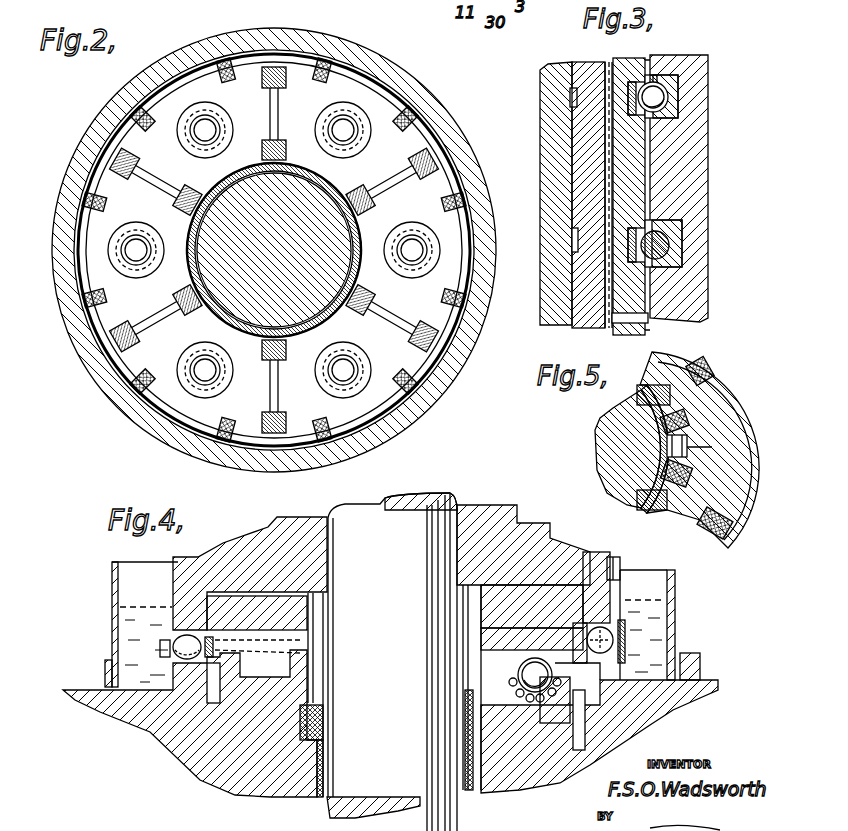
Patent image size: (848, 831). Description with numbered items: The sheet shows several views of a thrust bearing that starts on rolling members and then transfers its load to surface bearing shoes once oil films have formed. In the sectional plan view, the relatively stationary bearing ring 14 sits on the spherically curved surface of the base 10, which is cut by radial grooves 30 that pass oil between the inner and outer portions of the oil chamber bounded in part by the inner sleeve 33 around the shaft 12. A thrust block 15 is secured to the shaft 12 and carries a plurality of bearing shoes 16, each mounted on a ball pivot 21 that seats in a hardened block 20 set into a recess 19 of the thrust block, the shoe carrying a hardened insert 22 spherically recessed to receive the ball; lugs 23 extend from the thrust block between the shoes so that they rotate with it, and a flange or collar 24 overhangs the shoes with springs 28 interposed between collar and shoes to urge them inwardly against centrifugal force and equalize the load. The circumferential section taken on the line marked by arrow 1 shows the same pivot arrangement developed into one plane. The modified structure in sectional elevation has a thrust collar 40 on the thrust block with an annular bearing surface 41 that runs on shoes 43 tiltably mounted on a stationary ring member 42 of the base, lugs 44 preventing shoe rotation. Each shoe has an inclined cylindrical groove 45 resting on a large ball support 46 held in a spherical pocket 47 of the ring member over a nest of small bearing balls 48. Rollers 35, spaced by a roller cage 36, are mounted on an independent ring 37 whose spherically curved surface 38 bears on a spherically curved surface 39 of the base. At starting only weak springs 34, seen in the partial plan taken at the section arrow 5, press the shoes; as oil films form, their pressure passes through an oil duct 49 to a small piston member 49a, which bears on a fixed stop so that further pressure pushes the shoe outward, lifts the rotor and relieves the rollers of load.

In FIG. 2, the section line 1 is at (43, 118).
In FIG. 3, the section line 1 is at (516, 255).
In FIG. 3, the base 10 is at (558, 298).
In FIG. 2, the shaft 12 is at (352, 278).
In FIG. 4, the shaft 12 is at (355, 780).
In FIG. 3, the bearing ring 14 is at (600, 170).
In FIG. 3, the thrust block 15 is at (693, 196).
In FIG. 4, the thrust block 15 is at (497, 525).
In FIG. 2, the bearing shoes 16 is at (383, 148).
In FIG. 3, the bearing shoes 16 is at (633, 162).
In FIG. 3, the recesses 19 is at (660, 127).
In FIG. 3, the blocks 20 is at (698, 116).
In FIG. 3, the ball pivots 21 is at (667, 90).
In FIG. 2, the hardened inserts 22 is at (353, 110).
In FIG. 3, the hardened inserts 22 is at (643, 277).
In FIG. 2, the lugs 23 is at (267, 92).
In FIG. 2, the collar 24 is at (377, 56).
In FIG. 2, the springs 28 is at (452, 187).
In FIG. 3, the radial grooves 30 is at (577, 232).
In FIG. 2, the inner sleeve 33 is at (318, 173).
In FIG. 5, the springs 34 is at (657, 460).
In FIG. 4, the rollers 35 is at (623, 617).
In FIG. 4, the roller cage 36 is at (627, 653).
In FIG. 4, the independent ring 37 is at (617, 703).
In FIG. 4, the spherically curved surface 38 is at (573, 743).
In FIG. 4, the spherically curved surface 39 is at (603, 740).
In FIG. 4, the thrust collar 40 is at (620, 570).
In FIG. 4, the annular bearing surface 41 is at (490, 610).
In FIG. 4, the stationary ring member 42 is at (460, 727).
In FIG. 4, the bearing shoes 43 is at (475, 663).
In FIG. 4, the lugs 44 is at (175, 717).
In FIG. 4, the inclined cylindrical groove 45 is at (473, 687).
In FIG. 4, the ball support 46 is at (477, 695).
In FIG. 4, the spherical pockets 47 is at (513, 707).
In FIG. 4, the small bearing balls 48 is at (540, 707).
In FIG. 4, the oil duct 49 is at (550, 600).
In FIG. 5, the piston member 49a is at (730, 400).
In FIG. 4, the piston member 49a is at (487, 630).
In FIG. 4, the section line 5 is at (417, 647).